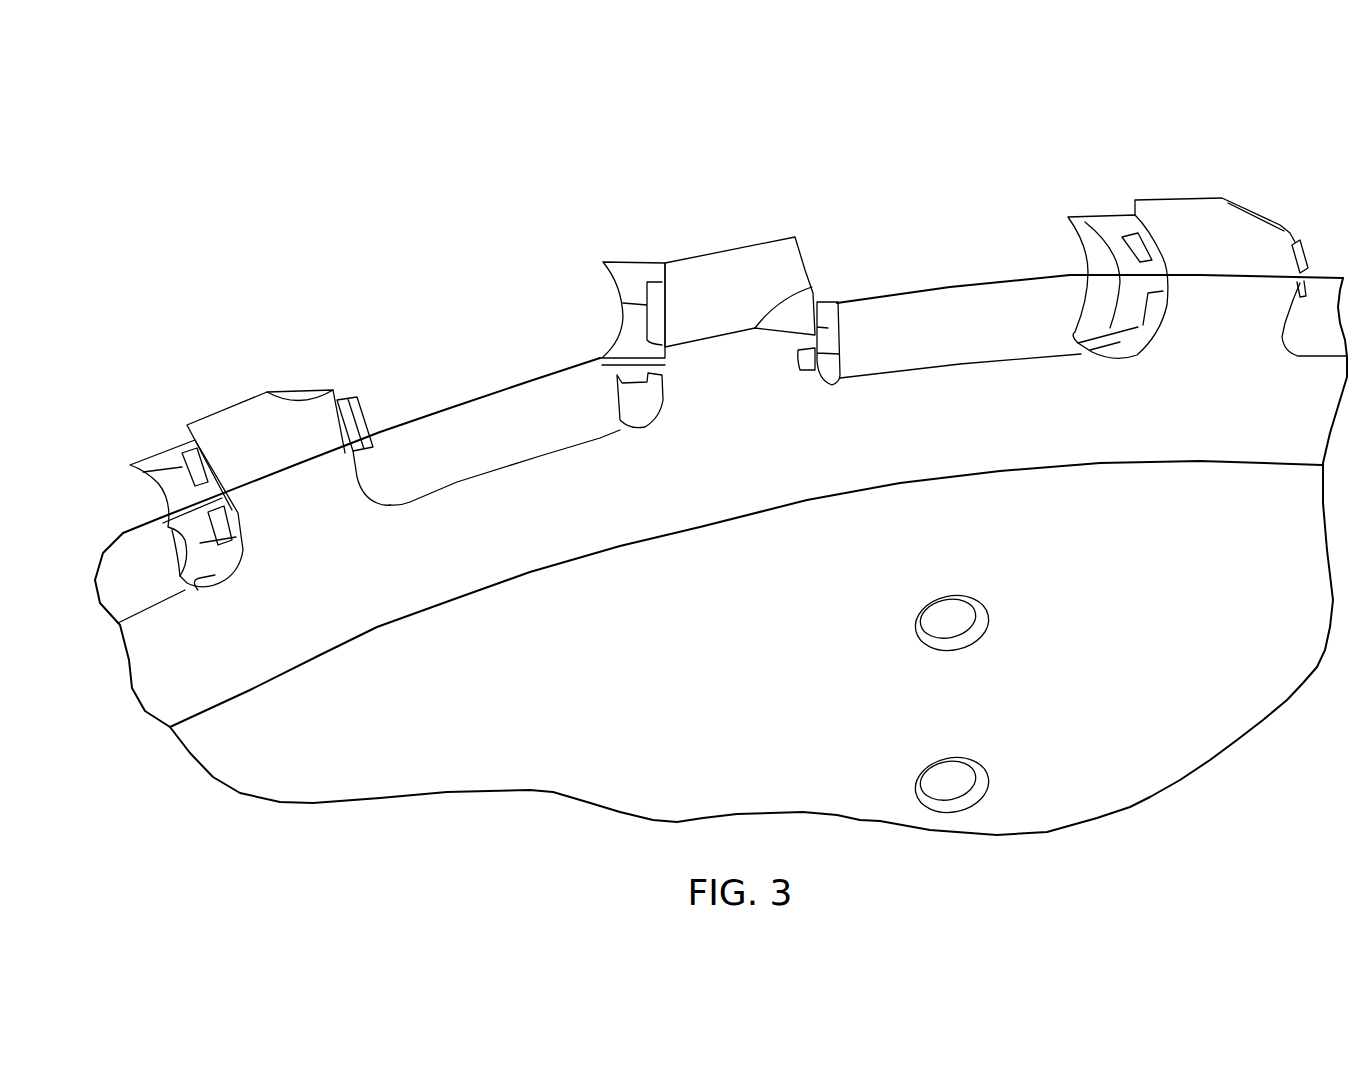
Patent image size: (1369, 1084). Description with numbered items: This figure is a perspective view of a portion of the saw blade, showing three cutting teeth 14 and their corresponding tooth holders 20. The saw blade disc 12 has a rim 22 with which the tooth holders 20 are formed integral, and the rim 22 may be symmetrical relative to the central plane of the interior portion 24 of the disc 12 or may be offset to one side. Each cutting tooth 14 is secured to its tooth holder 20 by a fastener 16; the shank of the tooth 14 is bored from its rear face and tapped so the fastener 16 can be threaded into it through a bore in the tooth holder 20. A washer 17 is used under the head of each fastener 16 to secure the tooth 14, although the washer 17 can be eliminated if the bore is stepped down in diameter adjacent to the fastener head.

The saw blade disc 12 is at (931, 287).
The cutting tooth 14 is at (152, 462).
The fastener 16 is at (372, 412).
The washer 17 is at (350, 455).
The tooth holder 20 is at (230, 412).
The rim 22 is at (967, 426).
The interior portion 24 is at (797, 678).